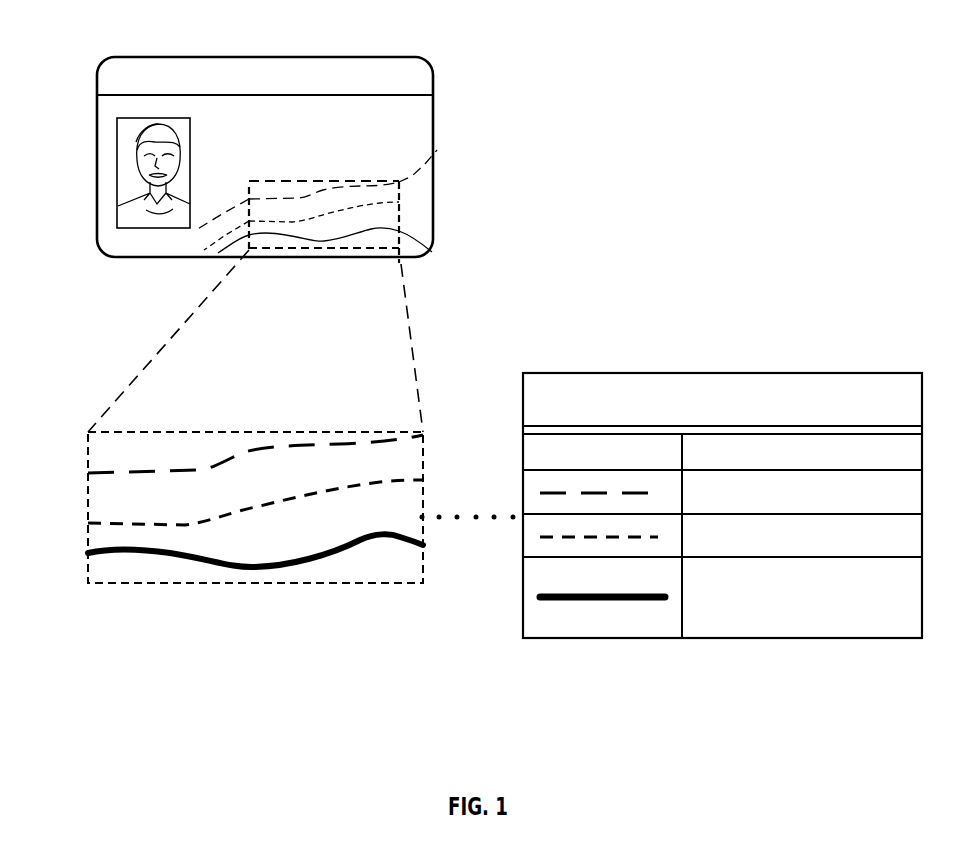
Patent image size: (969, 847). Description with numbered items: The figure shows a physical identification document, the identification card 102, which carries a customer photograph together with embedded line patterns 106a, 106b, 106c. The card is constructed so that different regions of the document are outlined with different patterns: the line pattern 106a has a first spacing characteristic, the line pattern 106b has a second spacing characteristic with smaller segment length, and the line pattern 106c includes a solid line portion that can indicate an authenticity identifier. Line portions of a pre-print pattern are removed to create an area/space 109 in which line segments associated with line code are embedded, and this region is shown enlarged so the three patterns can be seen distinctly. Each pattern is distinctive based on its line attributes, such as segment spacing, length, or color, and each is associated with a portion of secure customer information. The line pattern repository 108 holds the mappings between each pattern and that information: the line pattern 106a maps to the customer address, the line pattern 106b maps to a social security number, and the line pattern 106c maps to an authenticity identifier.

The identification card 102 is at (102, 59).
The line pattern repository 108 is at (523, 392).
The area/space 109 is at (113, 462).
The line pattern 106a is at (238, 458).
The line pattern 106b is at (152, 527).
The line pattern 106c is at (140, 553).